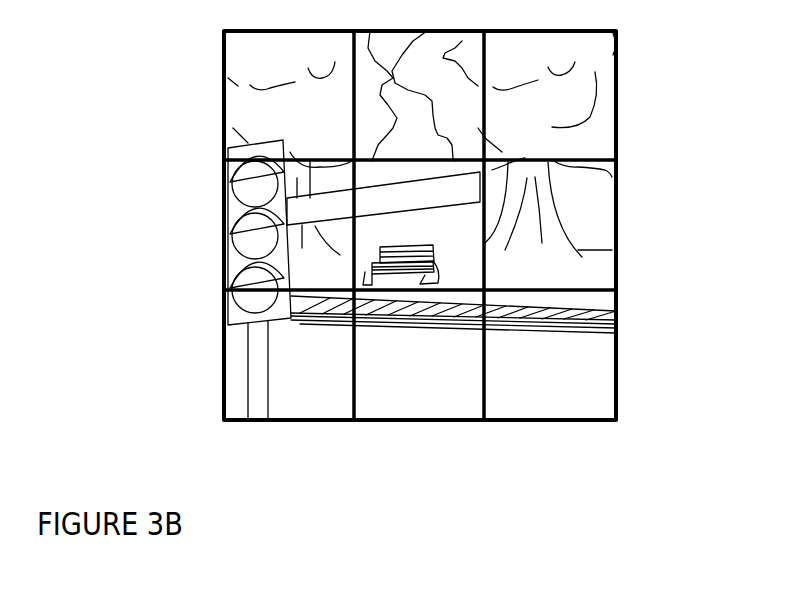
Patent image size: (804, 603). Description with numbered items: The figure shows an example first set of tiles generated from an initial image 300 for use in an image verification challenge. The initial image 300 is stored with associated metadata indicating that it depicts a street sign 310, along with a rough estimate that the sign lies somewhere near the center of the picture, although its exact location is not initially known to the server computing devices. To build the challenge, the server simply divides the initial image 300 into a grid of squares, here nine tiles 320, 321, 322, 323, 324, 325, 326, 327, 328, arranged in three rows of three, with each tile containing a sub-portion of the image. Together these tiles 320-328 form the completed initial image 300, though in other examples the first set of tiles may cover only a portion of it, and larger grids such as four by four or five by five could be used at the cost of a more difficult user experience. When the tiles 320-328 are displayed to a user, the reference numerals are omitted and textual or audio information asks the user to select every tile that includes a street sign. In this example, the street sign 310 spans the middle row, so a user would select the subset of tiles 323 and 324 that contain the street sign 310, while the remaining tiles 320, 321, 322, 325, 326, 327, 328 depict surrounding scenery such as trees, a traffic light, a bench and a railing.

The initial image 300 is at (617, 67).
The street sign 310 is at (287, 211).
The tile 320 is at (289, 99).
The tile 321 is at (428, 96).
The tile 322 is at (550, 95).
The tile 323 is at (289, 225).
The tile 324 is at (419, 225).
The tile 325 is at (550, 224).
The tile 326 is at (289, 355).
The tile 327 is at (453, 355).
The tile 328 is at (550, 355).